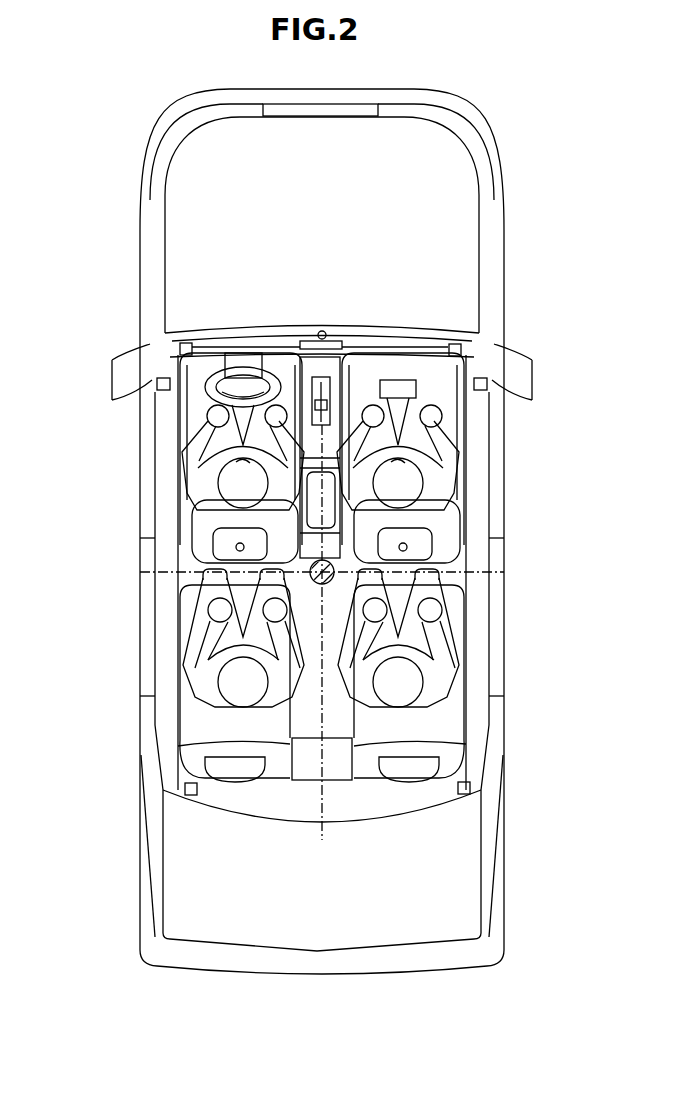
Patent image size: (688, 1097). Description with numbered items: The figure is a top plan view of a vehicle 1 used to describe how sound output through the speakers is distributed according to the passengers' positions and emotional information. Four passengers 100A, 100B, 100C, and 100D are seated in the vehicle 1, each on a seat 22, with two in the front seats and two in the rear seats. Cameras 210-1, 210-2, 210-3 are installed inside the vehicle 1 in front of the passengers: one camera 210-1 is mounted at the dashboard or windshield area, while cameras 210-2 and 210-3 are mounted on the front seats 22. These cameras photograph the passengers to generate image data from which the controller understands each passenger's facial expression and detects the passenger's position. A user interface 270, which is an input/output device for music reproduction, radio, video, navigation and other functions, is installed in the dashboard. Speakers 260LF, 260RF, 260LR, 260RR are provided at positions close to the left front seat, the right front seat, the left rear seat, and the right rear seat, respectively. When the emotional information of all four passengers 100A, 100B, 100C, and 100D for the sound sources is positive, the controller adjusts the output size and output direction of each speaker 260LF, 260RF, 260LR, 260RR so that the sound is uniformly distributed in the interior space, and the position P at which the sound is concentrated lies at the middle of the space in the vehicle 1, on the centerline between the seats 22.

The vehicle 1 is at (150, 200).
The seat 22 is at (193, 522).
The passenger 100A is at (220, 473).
The passenger 100B is at (418, 483).
The passenger 100C is at (230, 680).
The passenger 100D is at (412, 680).
The camera 210-1 is at (325, 331).
The camera 210-2 is at (236, 547).
The camera 210-3 is at (407, 547).
The speaker 260LF is at (180, 349).
The speaker 260RF is at (462, 350).
The speaker 260LR is at (185, 789).
The speaker 260RR is at (470, 788).
The user interface 270 is at (305, 343).
The position at which the sound is concentrated P is at (312, 580).